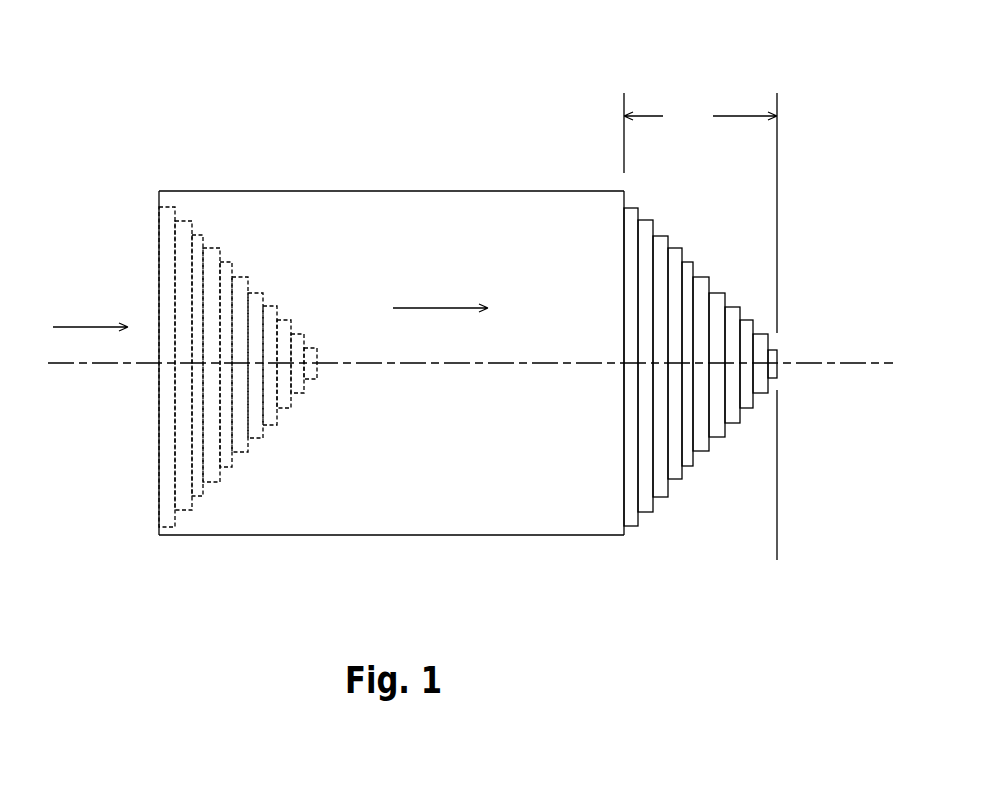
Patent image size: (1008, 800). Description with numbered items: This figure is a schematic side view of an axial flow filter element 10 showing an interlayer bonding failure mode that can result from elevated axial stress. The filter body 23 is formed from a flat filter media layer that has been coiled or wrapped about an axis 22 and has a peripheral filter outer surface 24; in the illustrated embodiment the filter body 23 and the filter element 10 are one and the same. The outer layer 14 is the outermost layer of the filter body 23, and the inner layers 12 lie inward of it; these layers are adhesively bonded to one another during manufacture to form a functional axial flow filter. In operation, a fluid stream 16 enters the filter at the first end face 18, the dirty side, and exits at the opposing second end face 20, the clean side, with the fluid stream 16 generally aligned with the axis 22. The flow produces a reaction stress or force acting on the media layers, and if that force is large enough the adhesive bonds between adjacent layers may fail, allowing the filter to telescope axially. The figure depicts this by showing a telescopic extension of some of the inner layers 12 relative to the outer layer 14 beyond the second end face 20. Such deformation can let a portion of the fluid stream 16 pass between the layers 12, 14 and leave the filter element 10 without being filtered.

The axial flow filter element 10 is at (190, 88).
The inner layers 12 is at (629, 537).
The outer layer 14 is at (615, 538).
The fluid stream 16 is at (90, 317).
The first end face 18 is at (121, 457).
The second end face 20 is at (817, 386).
The axis 22 is at (97, 372).
The filter body 23 is at (269, 112).
The filter outer surface 24 is at (347, 191).